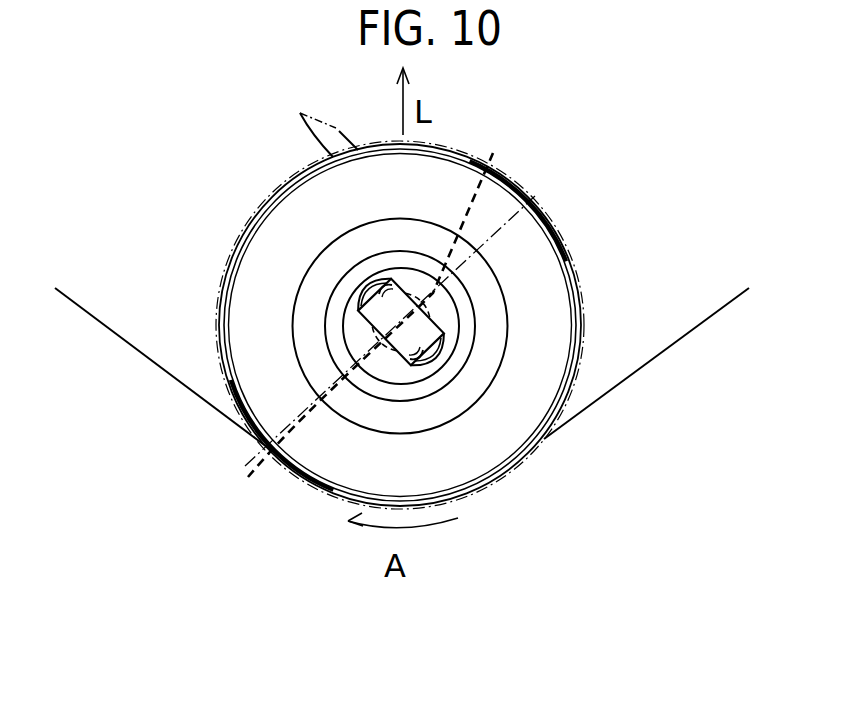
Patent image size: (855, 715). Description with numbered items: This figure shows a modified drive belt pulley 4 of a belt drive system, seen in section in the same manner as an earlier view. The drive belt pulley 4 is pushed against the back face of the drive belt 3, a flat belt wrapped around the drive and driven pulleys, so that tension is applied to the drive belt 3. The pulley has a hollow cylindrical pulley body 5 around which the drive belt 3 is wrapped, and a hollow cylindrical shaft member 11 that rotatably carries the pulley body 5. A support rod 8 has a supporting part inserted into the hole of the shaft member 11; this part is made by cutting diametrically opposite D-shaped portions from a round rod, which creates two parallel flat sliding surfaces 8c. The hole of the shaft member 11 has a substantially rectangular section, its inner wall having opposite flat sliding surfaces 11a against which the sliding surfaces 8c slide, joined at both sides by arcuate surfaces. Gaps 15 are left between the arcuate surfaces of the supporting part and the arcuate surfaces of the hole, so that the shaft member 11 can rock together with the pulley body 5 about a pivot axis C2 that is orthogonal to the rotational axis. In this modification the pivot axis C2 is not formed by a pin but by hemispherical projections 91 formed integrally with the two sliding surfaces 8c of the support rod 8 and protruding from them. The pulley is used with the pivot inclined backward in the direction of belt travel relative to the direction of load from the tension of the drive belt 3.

The drive belt 3 is at (667, 350).
The drive belt pulley 4 is at (555, 193).
The pulley body 5 is at (301, 114).
The support rod 8 is at (382, 342).
The sliding surface 8c is at (441, 329).
The shaft member 11 is at (432, 316).
The sliding surface 11a is at (387, 293).
The gap 15 is at (383, 290).
The hemispherical projection 91 is at (505, 166).
The pivot axis C2 is at (535, 196).